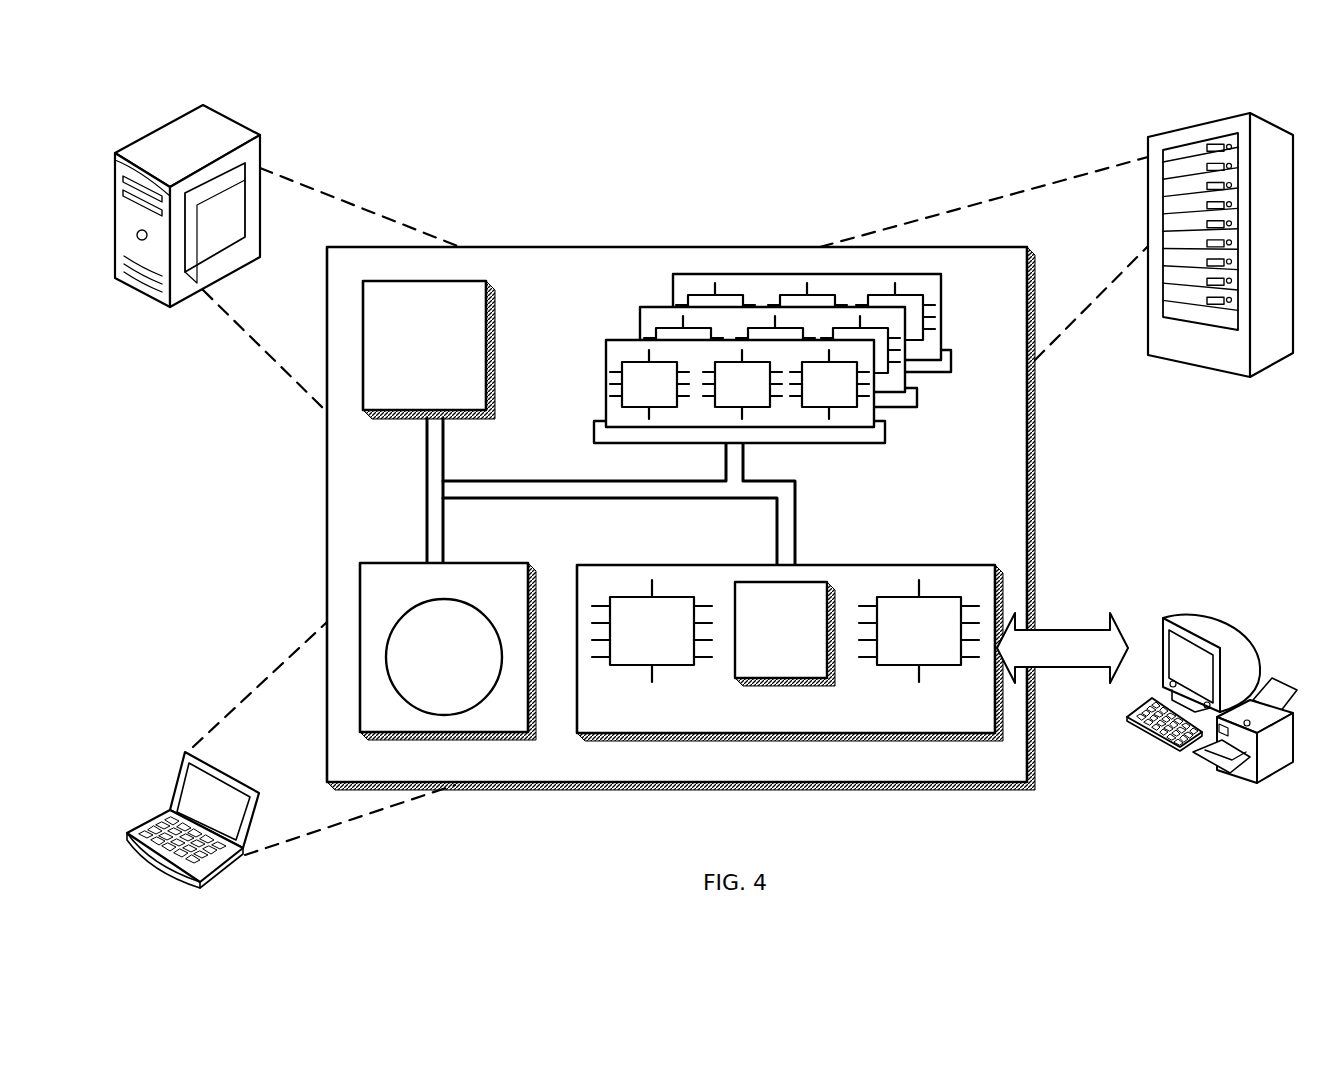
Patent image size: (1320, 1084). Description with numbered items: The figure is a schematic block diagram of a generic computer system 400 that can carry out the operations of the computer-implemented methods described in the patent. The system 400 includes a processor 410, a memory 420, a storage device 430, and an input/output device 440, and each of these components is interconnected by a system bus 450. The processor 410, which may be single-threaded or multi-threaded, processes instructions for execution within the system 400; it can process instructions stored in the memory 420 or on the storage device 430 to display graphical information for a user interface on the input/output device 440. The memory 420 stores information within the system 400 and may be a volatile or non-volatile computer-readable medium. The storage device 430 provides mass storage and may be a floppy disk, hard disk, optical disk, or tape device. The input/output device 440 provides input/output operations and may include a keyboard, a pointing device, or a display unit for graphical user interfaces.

The computer system 400 is at (507, 124).
The processor 410 is at (468, 397).
The memory 420 is at (944, 404).
The storage device 430 is at (521, 722).
The input/output device 440 is at (1161, 621).
The system bus 450 is at (604, 499).